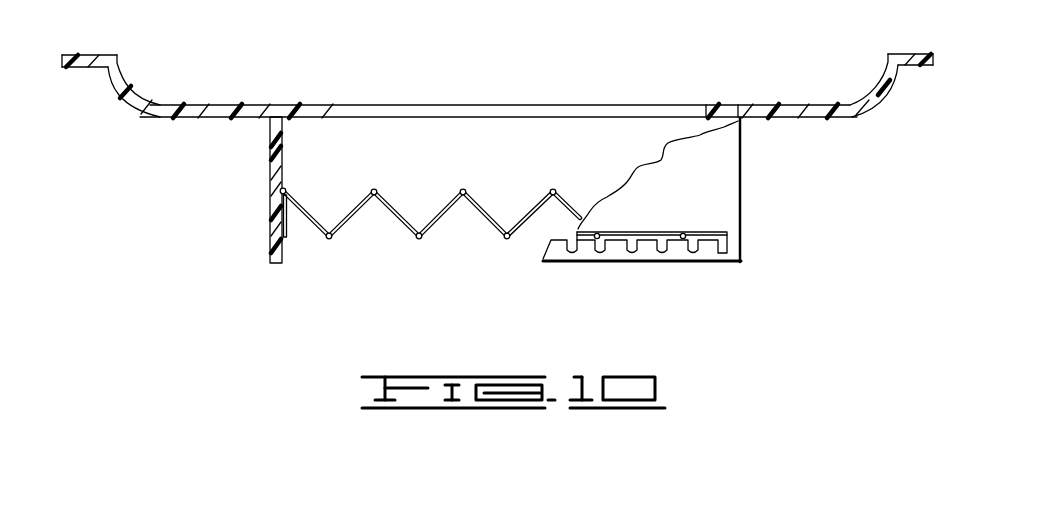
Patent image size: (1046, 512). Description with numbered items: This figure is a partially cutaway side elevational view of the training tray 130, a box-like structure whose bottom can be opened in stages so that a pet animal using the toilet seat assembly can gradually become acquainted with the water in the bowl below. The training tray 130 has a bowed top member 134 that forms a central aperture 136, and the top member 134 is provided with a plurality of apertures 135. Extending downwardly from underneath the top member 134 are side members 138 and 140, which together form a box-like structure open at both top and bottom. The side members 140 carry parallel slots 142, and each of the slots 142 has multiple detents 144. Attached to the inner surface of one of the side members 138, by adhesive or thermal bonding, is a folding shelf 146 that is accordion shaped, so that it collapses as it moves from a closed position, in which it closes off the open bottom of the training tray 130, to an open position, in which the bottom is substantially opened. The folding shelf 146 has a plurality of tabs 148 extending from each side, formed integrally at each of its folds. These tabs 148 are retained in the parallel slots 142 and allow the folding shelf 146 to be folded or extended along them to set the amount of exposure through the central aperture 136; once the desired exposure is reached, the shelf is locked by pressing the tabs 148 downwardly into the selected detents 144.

The training tray 130 is at (422, 93).
The top member 134 is at (190, 103).
The apertures 135 is at (124, 92).
The central aperture 136 is at (577, 130).
The side member 138 is at (278, 175).
The side member 140 is at (716, 212).
The parallel slots 142 is at (658, 233).
The detents 144 is at (571, 250).
The folding shelf 146 is at (393, 207).
The tabs 148 is at (329, 239).